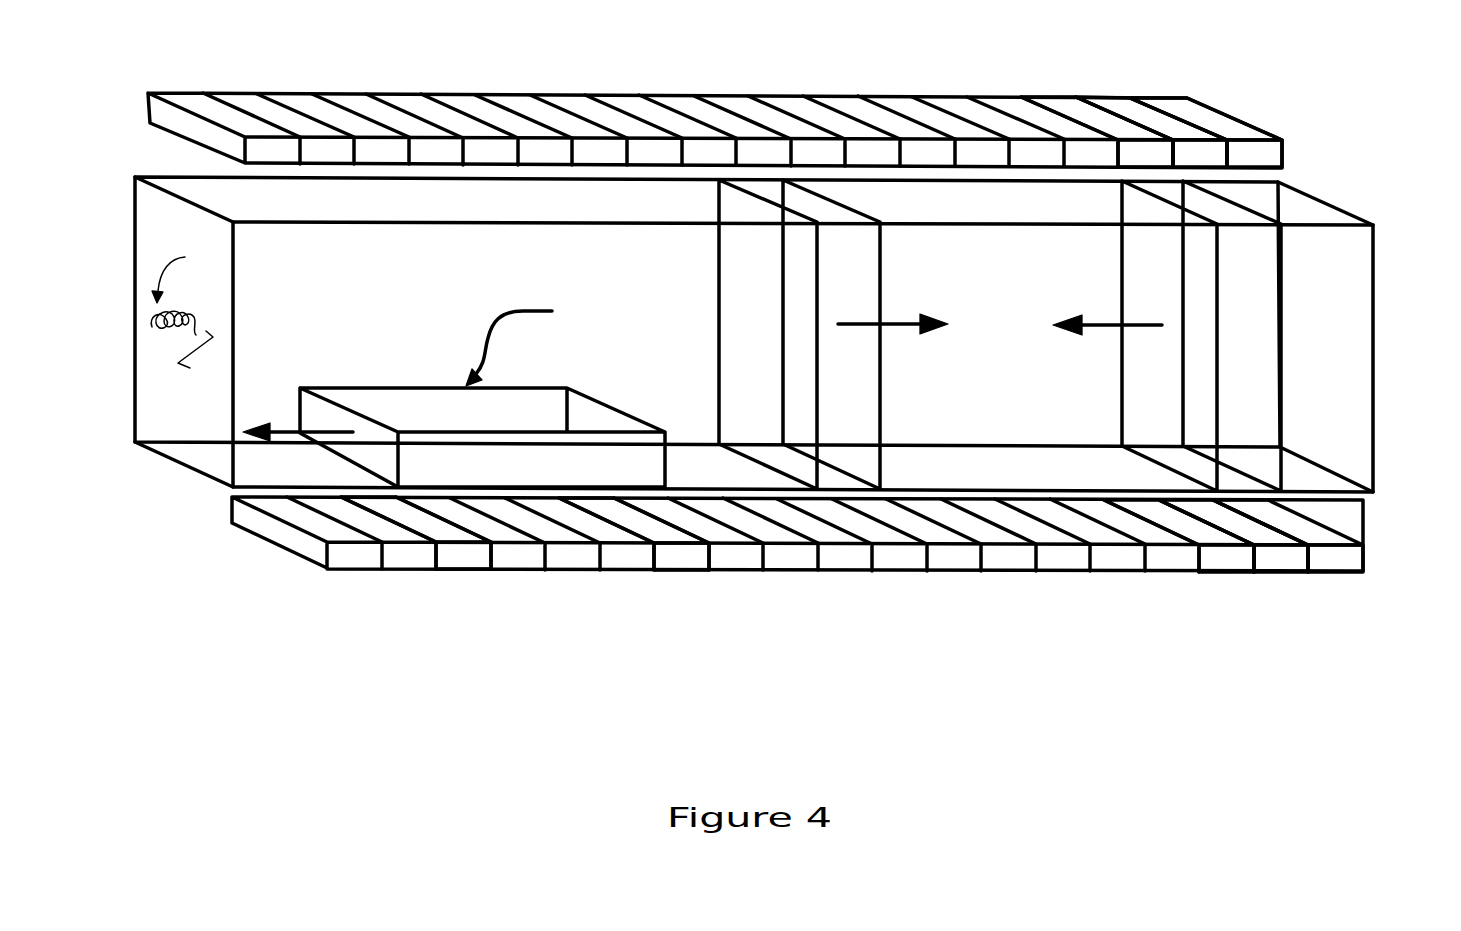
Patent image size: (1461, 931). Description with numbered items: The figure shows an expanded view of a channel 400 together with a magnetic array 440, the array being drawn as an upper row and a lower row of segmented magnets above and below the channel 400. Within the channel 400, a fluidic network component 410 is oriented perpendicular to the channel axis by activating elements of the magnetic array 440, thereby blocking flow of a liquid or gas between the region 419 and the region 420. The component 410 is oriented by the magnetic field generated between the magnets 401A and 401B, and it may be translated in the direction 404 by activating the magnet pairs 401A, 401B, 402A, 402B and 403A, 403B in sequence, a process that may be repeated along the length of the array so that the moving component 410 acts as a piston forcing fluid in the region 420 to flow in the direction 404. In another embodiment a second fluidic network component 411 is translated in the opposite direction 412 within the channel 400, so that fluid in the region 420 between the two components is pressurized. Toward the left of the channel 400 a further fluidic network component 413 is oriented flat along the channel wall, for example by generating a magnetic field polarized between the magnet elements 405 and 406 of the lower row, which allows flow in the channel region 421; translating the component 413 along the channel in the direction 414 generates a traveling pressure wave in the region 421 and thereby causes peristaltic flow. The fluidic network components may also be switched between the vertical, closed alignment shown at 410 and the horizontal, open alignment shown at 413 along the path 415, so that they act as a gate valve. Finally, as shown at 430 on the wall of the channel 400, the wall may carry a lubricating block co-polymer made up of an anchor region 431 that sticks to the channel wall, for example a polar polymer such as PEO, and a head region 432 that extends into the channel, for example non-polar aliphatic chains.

The channel 400 is at (1345, 377).
The magnet 401A is at (1333, 560).
The magnet 402A is at (1280, 560).
The magnet 403A is at (1230, 562).
The magnet 401B is at (1190, 82).
The magnet 402B is at (1120, 107).
The magnet 403B is at (1068, 105).
The direction of translation 404 is at (1110, 322).
The magnet element 405 is at (683, 572).
The magnet element 406 is at (467, 571).
The fluidic network component 410 is at (1248, 343).
The second fluidic network component 411 is at (853, 397).
The opposite direction 412 is at (900, 322).
The fluidic network component 413 is at (520, 402).
The direction of translation 414 is at (270, 430).
The path 415 is at (507, 310).
The region 419 is at (1353, 415).
The region 420 is at (1037, 387).
The channel region 421 is at (403, 342).
The lubricating block co-polymer 430 is at (158, 348).
The anchor region 431 is at (180, 264).
The head region 432 is at (189, 371).
The magnetic array 440 is at (727, 84).